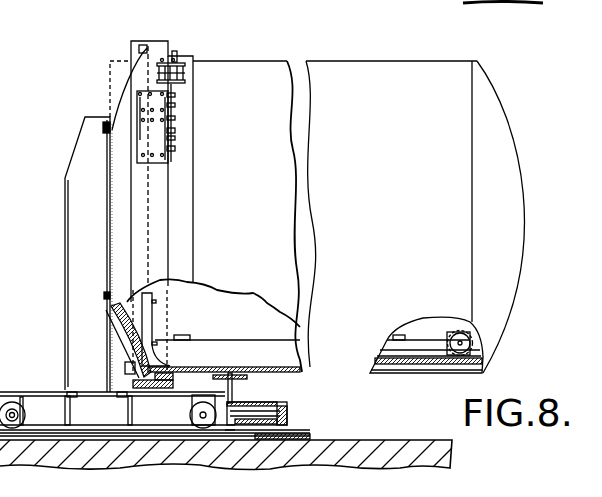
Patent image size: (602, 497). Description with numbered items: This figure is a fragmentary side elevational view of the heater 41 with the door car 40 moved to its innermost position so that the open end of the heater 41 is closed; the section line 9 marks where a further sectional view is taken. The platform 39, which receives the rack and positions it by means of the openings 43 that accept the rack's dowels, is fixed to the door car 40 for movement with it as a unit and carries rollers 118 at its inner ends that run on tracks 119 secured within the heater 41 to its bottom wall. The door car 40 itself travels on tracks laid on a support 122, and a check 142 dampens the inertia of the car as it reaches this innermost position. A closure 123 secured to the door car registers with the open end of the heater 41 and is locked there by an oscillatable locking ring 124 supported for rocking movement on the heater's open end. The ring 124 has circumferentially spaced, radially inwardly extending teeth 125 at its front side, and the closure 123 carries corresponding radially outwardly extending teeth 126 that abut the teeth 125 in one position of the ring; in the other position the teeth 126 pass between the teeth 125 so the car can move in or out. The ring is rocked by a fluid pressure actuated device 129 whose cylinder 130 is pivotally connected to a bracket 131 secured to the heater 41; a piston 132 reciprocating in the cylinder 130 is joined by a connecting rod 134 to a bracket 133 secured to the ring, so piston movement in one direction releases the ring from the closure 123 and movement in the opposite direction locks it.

The section line 9- 9 is at (137, 42).
The platform 39 is at (423, 347).
The door car 40 is at (62, 322).
The heater 41 is at (400, 58).
The openings 43 is at (183, 337).
The rollers 118 is at (470, 340).
The tracks 119 is at (483, 357).
The support 122 is at (405, 453).
The closure 123 is at (115, 342).
The locking ring 124 is at (157, 48).
The teeth 125 is at (167, 387).
The teeth 126 is at (128, 364).
The fluid pressure actuated device 129 is at (187, 72).
The cylinder 130 is at (183, 80).
The bracket 131 is at (173, 53).
The piston 132 is at (152, 80).
The bracket 133 is at (143, 145).
The connecting rod 134 is at (178, 93).
The check 142 is at (257, 417).